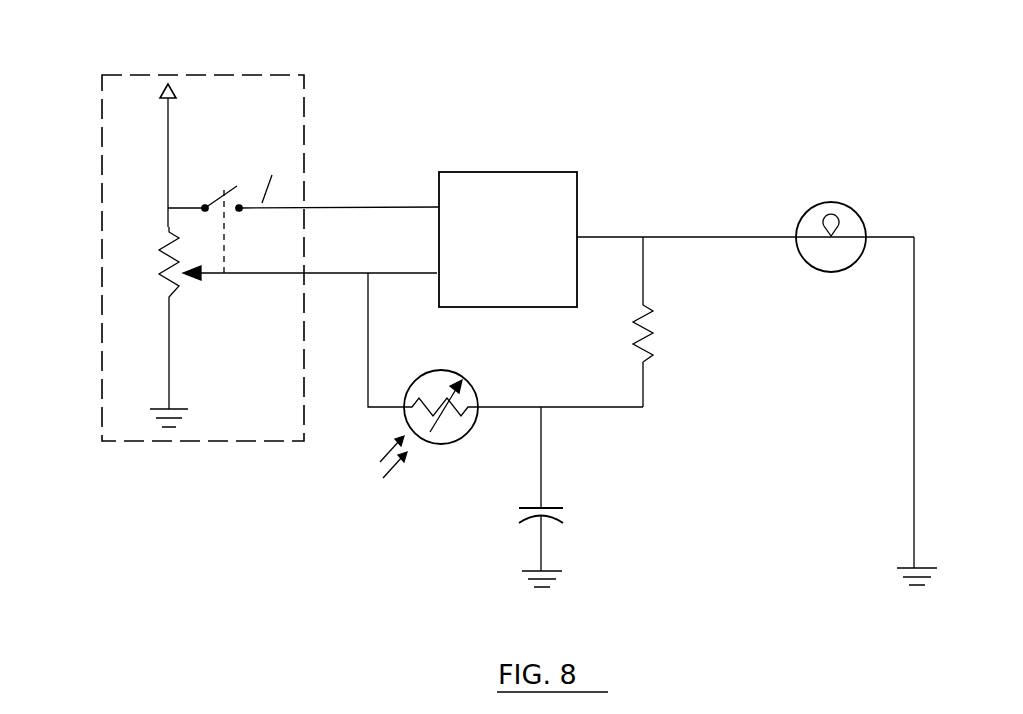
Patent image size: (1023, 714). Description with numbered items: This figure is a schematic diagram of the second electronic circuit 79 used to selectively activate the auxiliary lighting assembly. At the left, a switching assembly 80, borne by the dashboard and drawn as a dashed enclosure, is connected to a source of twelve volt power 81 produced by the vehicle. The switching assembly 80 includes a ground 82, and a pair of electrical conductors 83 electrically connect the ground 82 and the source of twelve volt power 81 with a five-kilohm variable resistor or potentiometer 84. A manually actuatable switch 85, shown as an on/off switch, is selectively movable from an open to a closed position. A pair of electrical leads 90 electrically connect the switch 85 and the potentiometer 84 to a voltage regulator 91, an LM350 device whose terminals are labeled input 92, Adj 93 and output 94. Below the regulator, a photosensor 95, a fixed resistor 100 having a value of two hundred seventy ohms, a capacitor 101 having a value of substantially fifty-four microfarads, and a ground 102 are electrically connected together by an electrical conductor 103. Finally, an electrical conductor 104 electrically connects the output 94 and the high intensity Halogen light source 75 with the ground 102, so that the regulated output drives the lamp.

The high intensity Halogen light source 75 is at (802, 214).
The electronic circuit 79 is at (374, 114).
The switching assembly 80 is at (205, 66).
The source of 12 volt power 81 is at (164, 92).
The ground 82 is at (175, 425).
The pair of electrical conductors 83 is at (169, 192).
The 5K ohm potentiometer 84 is at (176, 279).
The manually actuatable switch 85 is at (213, 183).
The pair of electrical leads 90 is at (328, 207).
The voltage regulator 91 is at (578, 166).
The input terminal 92 is at (437, 204).
The Adj terminal 93 is at (438, 278).
The output terminal 94 is at (577, 238).
The photosensor 95 is at (420, 374).
The fixed resistor 100 is at (651, 306).
The capacitor 101 is at (554, 505).
The ground 102 is at (544, 590).
The electrical conductor 103 is at (598, 404).
The electrical conductor 104 is at (905, 312).